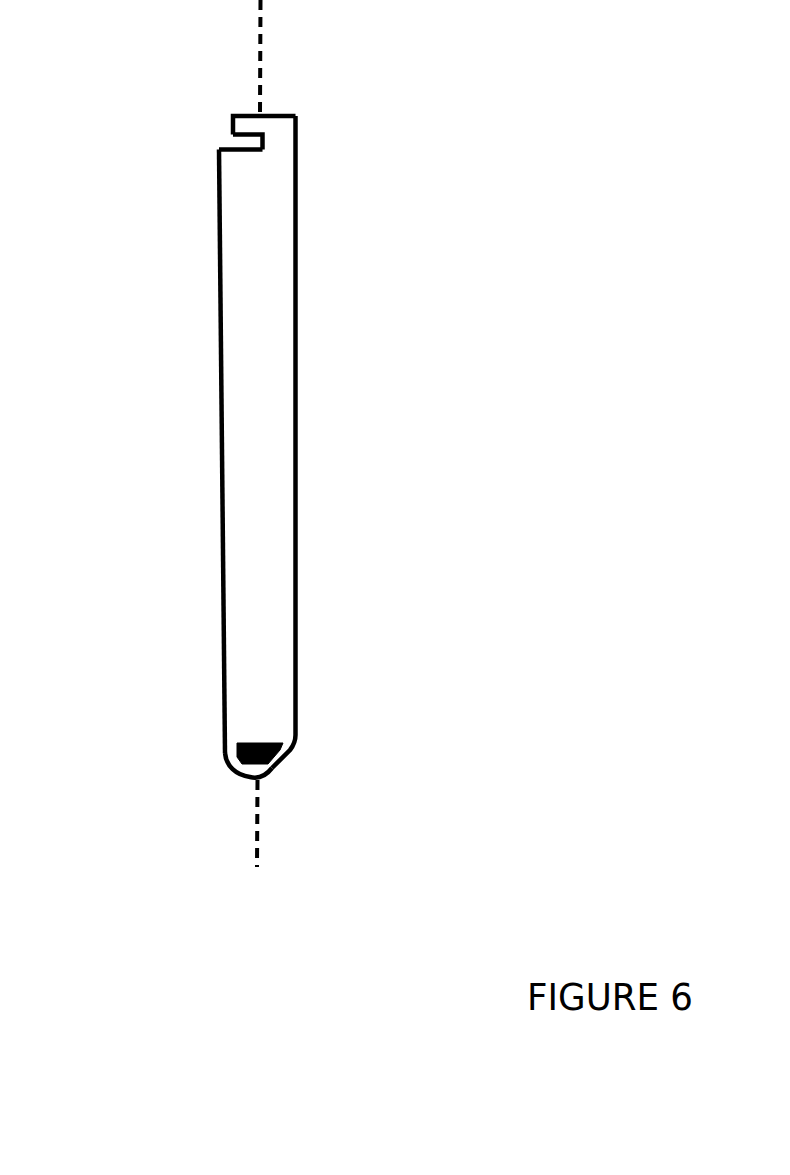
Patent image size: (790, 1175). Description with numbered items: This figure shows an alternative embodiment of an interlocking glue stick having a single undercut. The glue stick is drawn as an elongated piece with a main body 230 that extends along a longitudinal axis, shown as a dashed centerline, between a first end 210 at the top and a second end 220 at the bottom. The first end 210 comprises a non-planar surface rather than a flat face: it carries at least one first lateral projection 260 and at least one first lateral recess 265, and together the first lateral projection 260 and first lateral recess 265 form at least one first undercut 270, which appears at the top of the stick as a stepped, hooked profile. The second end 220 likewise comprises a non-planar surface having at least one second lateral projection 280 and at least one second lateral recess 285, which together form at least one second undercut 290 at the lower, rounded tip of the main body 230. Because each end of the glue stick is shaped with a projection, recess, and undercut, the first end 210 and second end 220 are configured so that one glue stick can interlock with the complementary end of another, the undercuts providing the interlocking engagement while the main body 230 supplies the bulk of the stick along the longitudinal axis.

The first end 210 is at (280, 112).
The second end 220 is at (267, 783).
The main body 230 is at (297, 387).
The first lateral projection 260 is at (230, 113).
The first lateral recess 265 is at (263, 145).
The first undercut 270 is at (235, 142).
The second lateral projection 280 is at (268, 768).
The second lateral recess 285 is at (237, 749).
The second undercut 290 is at (262, 748).